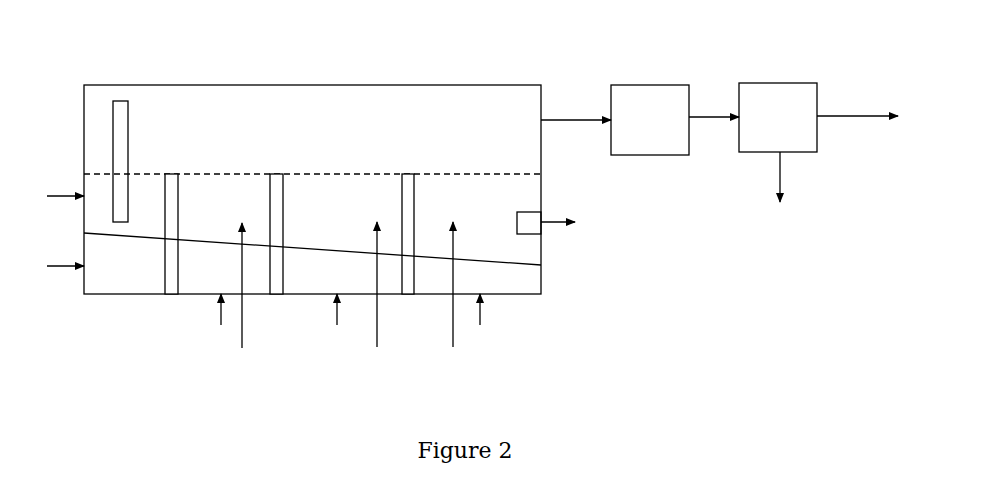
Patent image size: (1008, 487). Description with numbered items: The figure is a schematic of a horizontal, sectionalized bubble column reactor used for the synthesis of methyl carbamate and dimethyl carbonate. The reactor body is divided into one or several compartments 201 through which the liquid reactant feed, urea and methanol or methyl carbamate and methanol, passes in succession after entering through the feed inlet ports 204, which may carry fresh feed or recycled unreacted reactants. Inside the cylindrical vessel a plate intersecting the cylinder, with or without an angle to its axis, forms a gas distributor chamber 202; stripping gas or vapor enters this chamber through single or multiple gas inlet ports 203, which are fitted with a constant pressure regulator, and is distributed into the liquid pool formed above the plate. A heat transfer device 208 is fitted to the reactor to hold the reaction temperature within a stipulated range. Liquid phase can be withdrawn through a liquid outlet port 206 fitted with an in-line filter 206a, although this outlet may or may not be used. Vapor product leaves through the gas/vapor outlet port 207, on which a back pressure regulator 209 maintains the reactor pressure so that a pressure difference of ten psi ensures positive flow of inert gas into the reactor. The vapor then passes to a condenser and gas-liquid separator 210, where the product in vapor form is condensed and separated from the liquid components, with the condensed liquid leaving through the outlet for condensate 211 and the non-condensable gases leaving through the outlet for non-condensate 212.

The compartment 201 is at (312, 189).
The gas distributor chamber 202 is at (312, 256).
The gas inlet port 203 is at (282, 287).
The feed inlet port 204 is at (248, 271).
The liquid outlet port 206 is at (588, 220).
The in-line filter 206a is at (516, 211).
The gas/vapor outlet port 207 is at (576, 106).
The heat transfer device 208 is at (143, 161).
The back pressure regulator 209 is at (630, 85).
The condenser and gas-liquid separator 210 is at (758, 83).
The outlet for condensate 211 is at (778, 192).
The outlet for non-condensate 212 is at (857, 134).